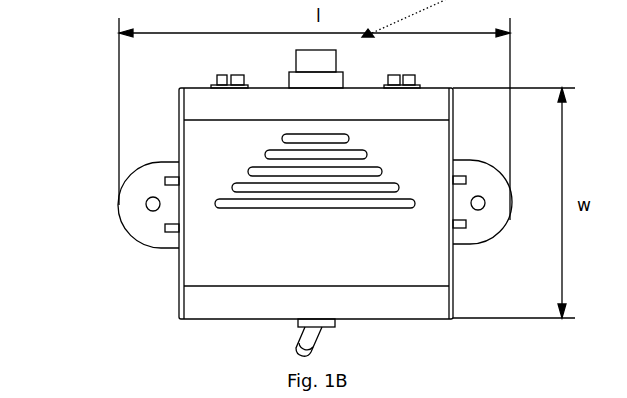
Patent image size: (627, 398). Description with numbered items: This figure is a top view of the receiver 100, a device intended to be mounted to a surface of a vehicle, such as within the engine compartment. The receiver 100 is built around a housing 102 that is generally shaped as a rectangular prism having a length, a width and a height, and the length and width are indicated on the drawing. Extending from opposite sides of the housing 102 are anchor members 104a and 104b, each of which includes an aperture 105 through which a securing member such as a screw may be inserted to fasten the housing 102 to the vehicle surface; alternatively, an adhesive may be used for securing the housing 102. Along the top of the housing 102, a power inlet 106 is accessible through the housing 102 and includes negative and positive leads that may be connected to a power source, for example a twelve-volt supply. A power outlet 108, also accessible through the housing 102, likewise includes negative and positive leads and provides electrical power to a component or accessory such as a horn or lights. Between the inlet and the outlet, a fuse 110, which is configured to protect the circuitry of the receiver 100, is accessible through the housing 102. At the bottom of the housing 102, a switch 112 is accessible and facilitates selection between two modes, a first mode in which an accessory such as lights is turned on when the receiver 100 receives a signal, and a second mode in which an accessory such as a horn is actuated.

The receiver 100 is at (197, 397).
The housing 102 is at (223, 264).
The anchor member 104a is at (150, 225).
The anchor member 104b is at (493, 213).
The apertures 105 is at (165, 180).
The power inlet 106 is at (214, 81).
The power outlet 108 is at (423, 84).
The fuse 110 is at (326, 61).
The switch 112 is at (318, 342).